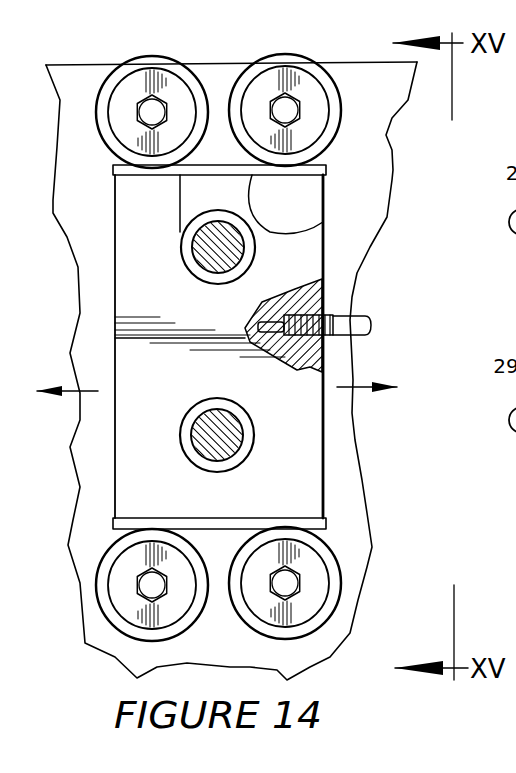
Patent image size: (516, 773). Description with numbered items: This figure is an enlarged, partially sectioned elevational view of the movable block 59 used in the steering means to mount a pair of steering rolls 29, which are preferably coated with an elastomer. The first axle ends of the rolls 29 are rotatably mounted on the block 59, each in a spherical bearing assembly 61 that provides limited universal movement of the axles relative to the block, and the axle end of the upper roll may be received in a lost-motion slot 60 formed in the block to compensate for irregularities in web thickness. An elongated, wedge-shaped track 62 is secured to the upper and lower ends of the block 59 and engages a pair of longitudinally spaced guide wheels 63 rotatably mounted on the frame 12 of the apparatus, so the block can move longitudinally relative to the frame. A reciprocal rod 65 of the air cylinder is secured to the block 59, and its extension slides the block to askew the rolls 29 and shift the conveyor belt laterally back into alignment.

The frame 12 is at (88, 54).
The rolls 29 is at (205, 246).
The movable block 59 is at (308, 444).
The lost-motion slot 60 is at (318, 223).
The spherical bearing assembly 61 is at (196, 268).
The wedge-shaped track 62 is at (333, 165).
The guide wheels 63 is at (258, 67).
The reciprocal rod 65 is at (358, 318).